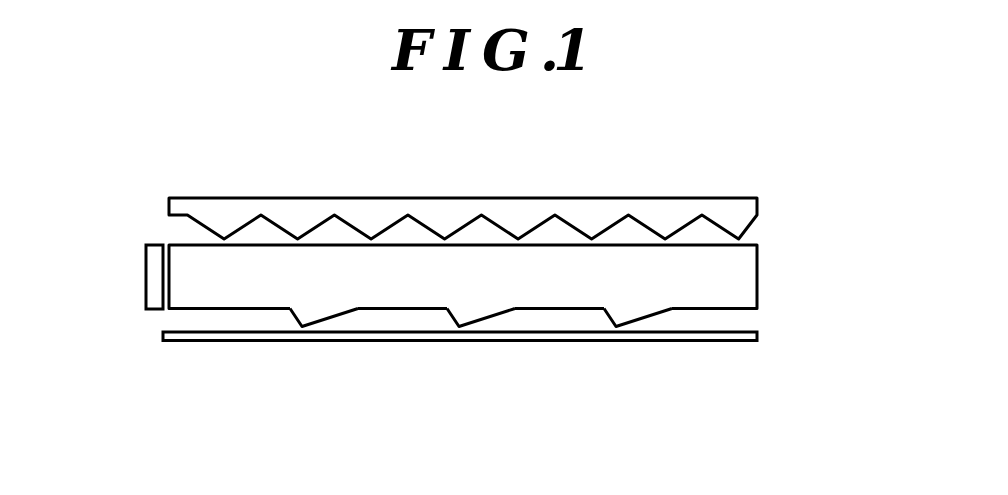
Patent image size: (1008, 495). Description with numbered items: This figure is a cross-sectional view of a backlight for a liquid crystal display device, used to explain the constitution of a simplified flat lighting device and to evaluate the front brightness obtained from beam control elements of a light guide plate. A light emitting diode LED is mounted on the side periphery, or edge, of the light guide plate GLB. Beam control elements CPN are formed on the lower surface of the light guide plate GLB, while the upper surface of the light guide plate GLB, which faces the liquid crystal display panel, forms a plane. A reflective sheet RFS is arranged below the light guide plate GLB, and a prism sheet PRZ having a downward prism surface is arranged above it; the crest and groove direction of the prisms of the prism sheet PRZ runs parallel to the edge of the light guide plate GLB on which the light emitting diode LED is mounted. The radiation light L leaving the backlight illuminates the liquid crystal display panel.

The prism sheet PRZ is at (644, 208).
The light guide plate GLB is at (703, 281).
The beam control elements CPN is at (307, 312).
The light emitting diode LED is at (153, 278).
The reflective sheet RFS is at (753, 336).
The radiation light L is at (493, 187).